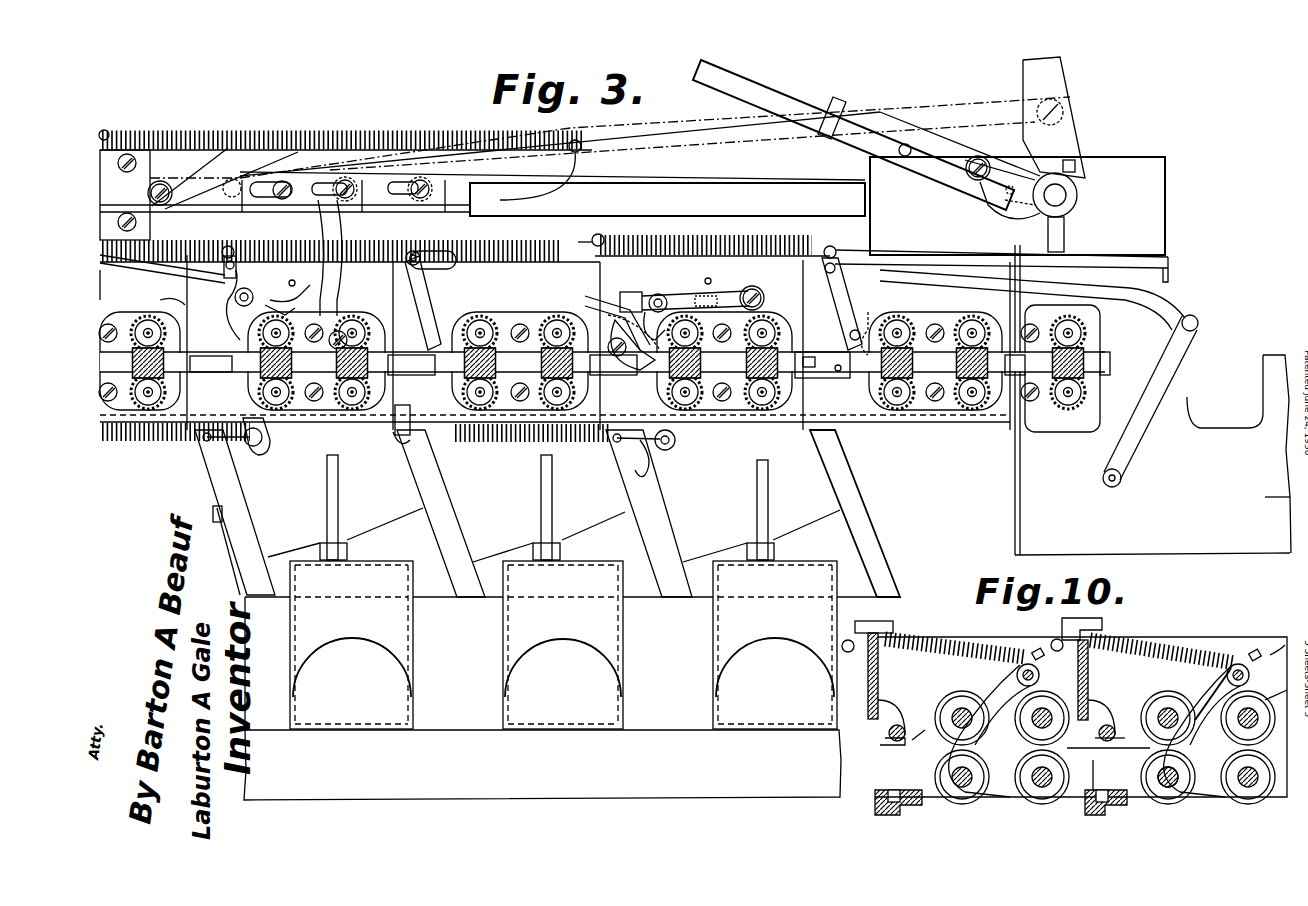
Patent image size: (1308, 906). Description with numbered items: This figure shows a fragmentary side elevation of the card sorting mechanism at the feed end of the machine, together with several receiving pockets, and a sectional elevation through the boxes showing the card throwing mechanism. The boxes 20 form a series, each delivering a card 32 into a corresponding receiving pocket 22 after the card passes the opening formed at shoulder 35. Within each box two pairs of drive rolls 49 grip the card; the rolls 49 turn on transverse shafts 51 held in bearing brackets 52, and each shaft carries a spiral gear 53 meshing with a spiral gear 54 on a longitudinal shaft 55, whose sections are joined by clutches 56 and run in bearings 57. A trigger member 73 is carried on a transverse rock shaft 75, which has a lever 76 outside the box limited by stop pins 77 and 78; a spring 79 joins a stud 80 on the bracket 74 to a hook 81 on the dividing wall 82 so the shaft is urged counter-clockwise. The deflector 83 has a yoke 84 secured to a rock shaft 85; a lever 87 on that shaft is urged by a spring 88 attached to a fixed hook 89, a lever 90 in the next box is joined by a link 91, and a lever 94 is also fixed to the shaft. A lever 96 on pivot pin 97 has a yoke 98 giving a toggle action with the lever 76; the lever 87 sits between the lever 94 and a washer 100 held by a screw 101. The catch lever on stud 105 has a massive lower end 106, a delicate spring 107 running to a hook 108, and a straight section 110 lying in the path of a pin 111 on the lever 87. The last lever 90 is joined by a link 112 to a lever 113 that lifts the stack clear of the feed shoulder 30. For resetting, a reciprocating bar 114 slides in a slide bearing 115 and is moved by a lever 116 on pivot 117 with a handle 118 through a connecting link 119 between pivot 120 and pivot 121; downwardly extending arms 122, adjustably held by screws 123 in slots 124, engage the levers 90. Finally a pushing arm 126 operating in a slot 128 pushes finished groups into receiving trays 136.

In FIG. 3, the boxes 20 is at (400, 435).
In FIG. 3, the receiving pockets 22 is at (815, 507).
In FIG. 10, the feed shoulder 30 is at (1286, 687).
In FIG. 10, the card 32 is at (1130, 790).
In FIG. 3, the shoulder 35 is at (1244, 454).
In FIG. 10, the drive rolls 49 is at (1242, 790).
In FIG. 3, the shafts 51 is at (978, 328).
In FIG. 10, the shafts 51 is at (1168, 790).
In FIG. 3, the bearing brackets 52 is at (922, 410).
In FIG. 3, the spiral gear 53 is at (972, 410).
In FIG. 3, the spiral gear 54 is at (866, 295).
In FIG. 3, the longitudinal shaft 55 is at (880, 410).
In FIG. 3, the clutches 56 is at (795, 415).
In FIG. 3, the bearings 57 is at (822, 378).
In FIG. 10, the trigger members 73 is at (1200, 700).
In FIG. 10, the bracket 74 is at (1230, 662).
In FIG. 3, the transverse rock shaft 75 is at (764, 298).
In FIG. 10, the transverse rock shaft 75 is at (1240, 658).
In FIG. 3, the lever 76 is at (728, 295).
In FIG. 3, the stop pin 77 is at (706, 278).
In FIG. 3, the stop pin 78 is at (695, 305).
In FIG. 10, the spring 79 is at (1155, 645).
In FIG. 10, the stud 80 is at (1262, 655).
In FIG. 10, the hook 81 is at (1082, 618).
In FIG. 3, the dividing wall 82 is at (820, 280).
In FIG. 10, the dividing wall 82 is at (1040, 660).
In FIG. 10, the deflector 83 is at (1090, 800).
In FIG. 10, the yoke 84 is at (888, 731).
In FIG. 10, the transverse rock shaft 85 is at (895, 740).
In FIG. 3, the lever 87 is at (690, 250).
In FIG. 3, the spring 88 is at (540, 250).
In FIG. 3, the fixed hook 89 is at (459, 190).
In FIG. 3, the lever 90 is at (430, 305).
In FIG. 3, the link 91 is at (452, 272).
In FIG. 3, the lever 94 is at (634, 351).
In FIG. 3, the lever 96 is at (275, 282).
In FIG. 3, the pivot pin 97 is at (240, 290).
In FIG. 3, the yoke 98 is at (293, 286).
In FIG. 3, the washer 100 is at (200, 272).
In FIG. 3, the screw 101 is at (152, 300).
In FIG. 3, the stud 105 is at (676, 440).
In FIG. 3, the lower end of lever 106 is at (650, 460).
In FIG. 3, the spring 107 is at (500, 440).
In FIG. 3, the hook 108 is at (432, 440).
In FIG. 3, the straight section 110 is at (609, 319).
In FIG. 3, the pin 111 is at (614, 327).
In FIG. 3, the link 112 is at (1140, 285).
In FIG. 3, the lever 113 is at (1180, 356).
In FIG. 3, the reciprocating bar 114 is at (865, 203).
In FIG. 3, the slide bearing 115 is at (185, 145).
In FIG. 3, the lever 116 is at (965, 145).
In FIG. 3, the pivot 117 is at (1067, 195).
In FIG. 3, the handle 118 is at (780, 95).
In FIG. 3, the connecting link 119 is at (645, 165).
In FIG. 3, the pivot 120 is at (985, 185).
In FIG. 3, the pivot 121 is at (163, 204).
In FIG. 3, the arms 122 is at (320, 242).
In FIG. 3, the screws 123 is at (345, 178).
In FIG. 3, the slots 124 is at (265, 198).
In FIG. 3, the pushing arm 126 is at (540, 498).
In FIG. 3, the slot 128 is at (775, 550).
In FIG. 3, the receiving trays 136 is at (395, 638).